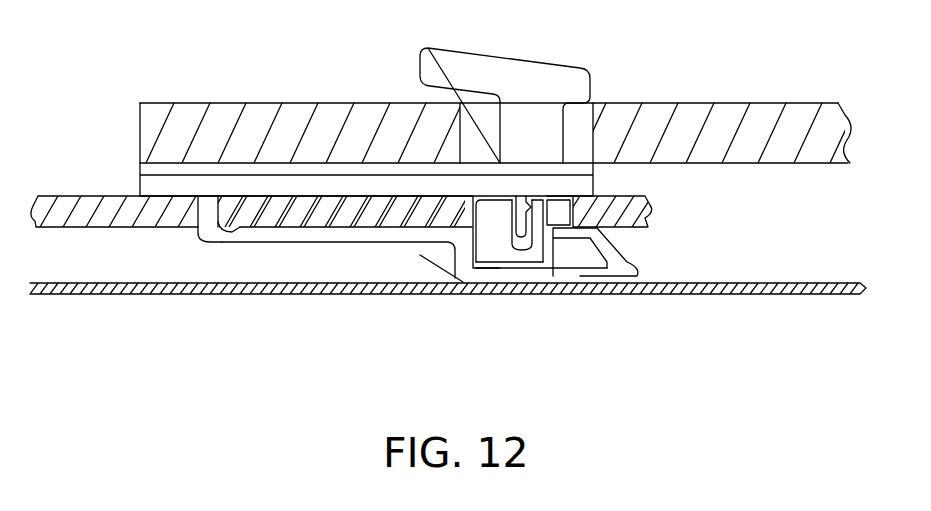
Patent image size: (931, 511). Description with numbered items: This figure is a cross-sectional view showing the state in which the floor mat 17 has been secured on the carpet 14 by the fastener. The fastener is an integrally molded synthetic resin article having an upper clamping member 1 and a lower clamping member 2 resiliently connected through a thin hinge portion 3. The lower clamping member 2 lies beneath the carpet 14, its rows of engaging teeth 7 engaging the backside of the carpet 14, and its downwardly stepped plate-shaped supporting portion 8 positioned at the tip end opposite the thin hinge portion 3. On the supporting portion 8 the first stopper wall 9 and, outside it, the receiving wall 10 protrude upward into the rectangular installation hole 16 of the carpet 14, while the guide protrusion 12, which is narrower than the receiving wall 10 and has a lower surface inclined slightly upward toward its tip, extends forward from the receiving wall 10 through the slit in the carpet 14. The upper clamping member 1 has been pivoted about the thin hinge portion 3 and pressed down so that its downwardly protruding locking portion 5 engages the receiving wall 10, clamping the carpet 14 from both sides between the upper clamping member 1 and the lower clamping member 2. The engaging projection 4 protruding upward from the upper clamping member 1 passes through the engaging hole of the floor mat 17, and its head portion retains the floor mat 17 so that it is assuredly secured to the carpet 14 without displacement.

The upper clamping member 1 is at (255, 178).
The lower clamping member 2 is at (312, 238).
The thin hinge portion 3 is at (213, 243).
The engaging projection 4 is at (517, 112).
The locking portion 5 is at (520, 200).
The engaging teeth 7 is at (318, 196).
The supporting portion 8 is at (495, 275).
The first stopper wall 9 is at (476, 232).
The receiving wall 10 is at (538, 205).
The guide protrusion 12 is at (578, 278).
The carpet 14 is at (60, 209).
The installation hole 16 is at (650, 211).
The floor mat 17 is at (771, 118).